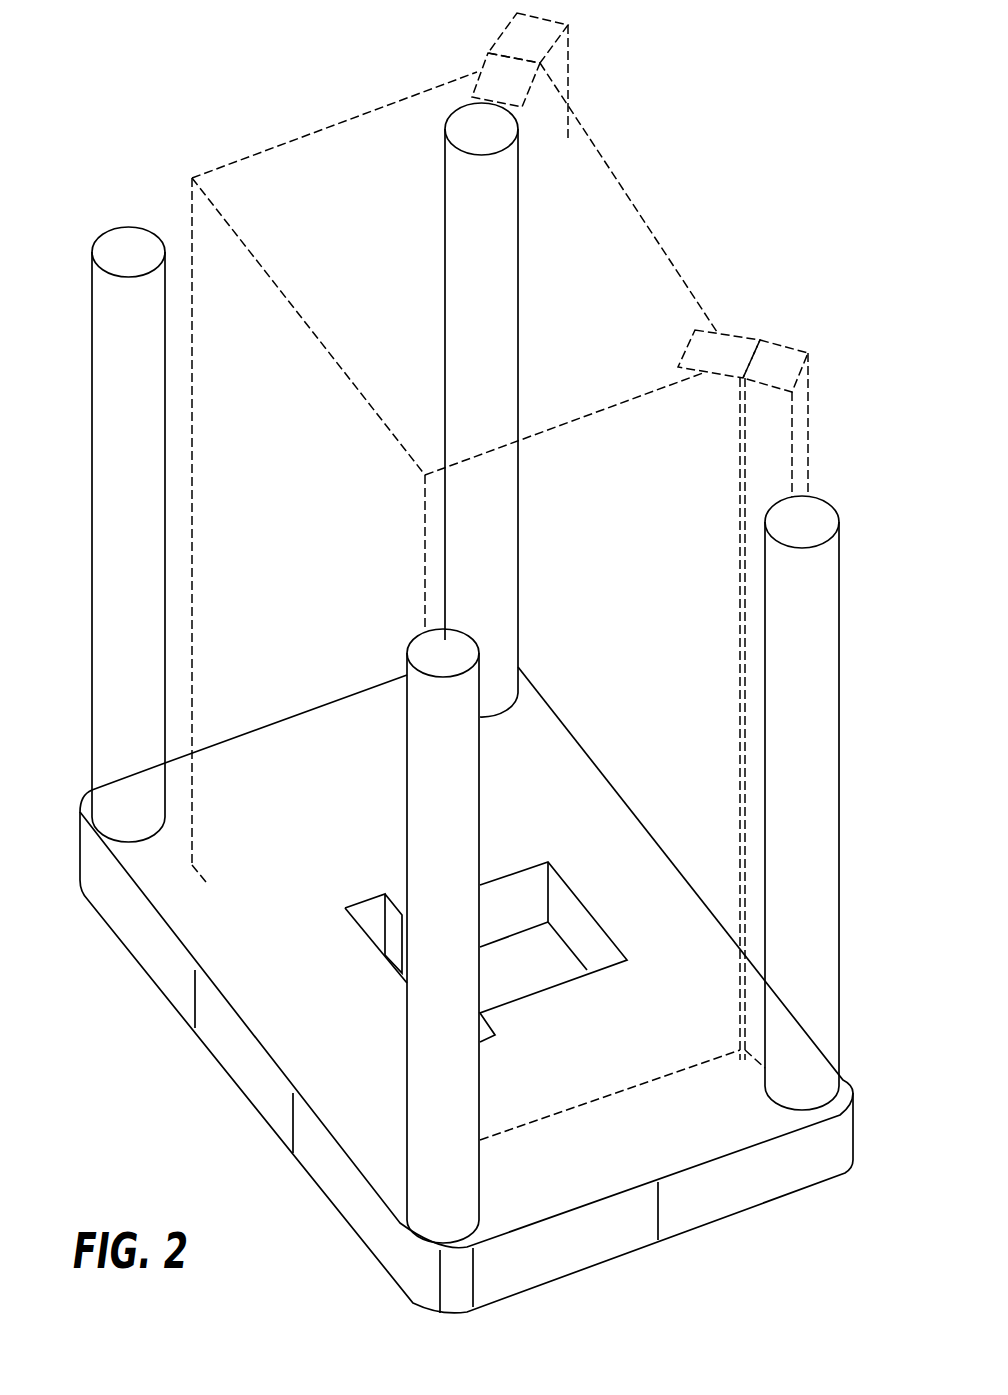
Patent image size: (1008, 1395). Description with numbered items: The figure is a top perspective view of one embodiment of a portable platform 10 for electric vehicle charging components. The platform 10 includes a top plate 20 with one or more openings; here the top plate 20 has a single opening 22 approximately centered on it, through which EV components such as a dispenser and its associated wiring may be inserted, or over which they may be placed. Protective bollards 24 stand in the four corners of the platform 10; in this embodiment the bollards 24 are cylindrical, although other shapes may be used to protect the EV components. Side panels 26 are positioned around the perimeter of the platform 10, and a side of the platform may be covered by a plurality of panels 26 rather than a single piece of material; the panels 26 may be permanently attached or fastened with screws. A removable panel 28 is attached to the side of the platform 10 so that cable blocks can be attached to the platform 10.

The portable platform 10 is at (66, 848).
The top plate 20 is at (667, 1155).
The opening 22 is at (548, 968).
The protective bollard 24 is at (120, 467).
The side panel 26 is at (148, 939).
The removable panel 28 is at (255, 1078).